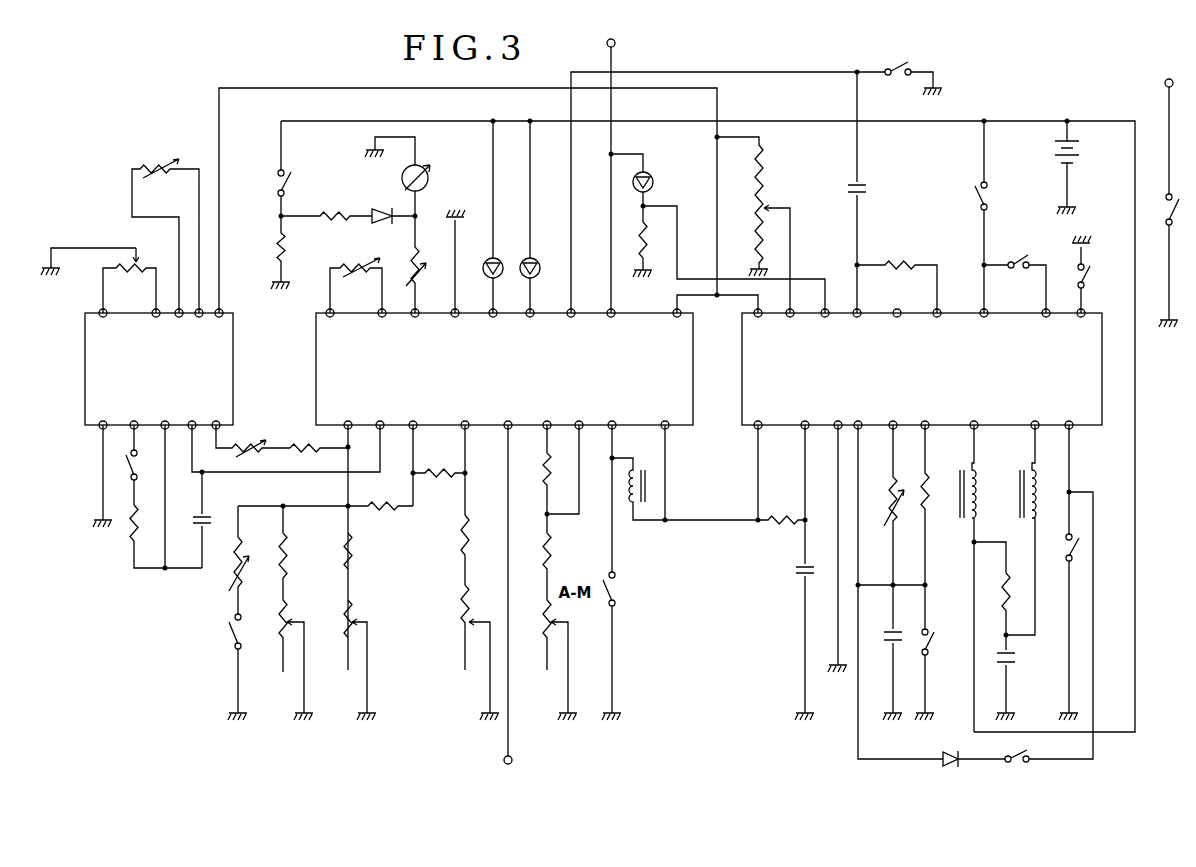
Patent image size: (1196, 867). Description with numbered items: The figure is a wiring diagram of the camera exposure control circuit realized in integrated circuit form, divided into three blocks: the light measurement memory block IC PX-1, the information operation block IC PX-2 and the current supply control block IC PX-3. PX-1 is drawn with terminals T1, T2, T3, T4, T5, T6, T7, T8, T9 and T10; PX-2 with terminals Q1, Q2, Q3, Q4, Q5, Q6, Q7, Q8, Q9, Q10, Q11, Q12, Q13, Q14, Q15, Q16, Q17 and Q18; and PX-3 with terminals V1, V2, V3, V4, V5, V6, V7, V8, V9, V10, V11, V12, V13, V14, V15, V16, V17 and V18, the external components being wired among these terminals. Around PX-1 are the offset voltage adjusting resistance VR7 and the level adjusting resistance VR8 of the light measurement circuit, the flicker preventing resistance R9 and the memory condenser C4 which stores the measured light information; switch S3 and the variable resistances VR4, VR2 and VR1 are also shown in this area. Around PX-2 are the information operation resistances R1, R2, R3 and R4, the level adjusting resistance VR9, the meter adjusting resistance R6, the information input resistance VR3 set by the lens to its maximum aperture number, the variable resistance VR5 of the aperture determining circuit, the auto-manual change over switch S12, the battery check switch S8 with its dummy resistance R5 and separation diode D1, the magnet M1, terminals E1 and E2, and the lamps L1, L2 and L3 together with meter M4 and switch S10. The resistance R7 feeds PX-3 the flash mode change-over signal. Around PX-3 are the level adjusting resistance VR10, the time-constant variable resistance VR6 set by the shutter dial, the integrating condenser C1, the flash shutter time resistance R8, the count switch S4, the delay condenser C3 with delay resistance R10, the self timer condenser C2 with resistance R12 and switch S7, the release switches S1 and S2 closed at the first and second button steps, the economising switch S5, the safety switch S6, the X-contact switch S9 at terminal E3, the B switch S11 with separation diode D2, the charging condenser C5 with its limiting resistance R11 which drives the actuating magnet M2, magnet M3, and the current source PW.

The light measurement memory block IC PX-1 is at (159, 369).
The information operation block IC PX-2 is at (504, 369).
The current supply control block IC PX-3 is at (922, 369).
The PX-1 terminal T1 is at (103, 416).
The PX-1 terminal T2 is at (134, 416).
The PX-1 terminal T3 is at (165, 416).
The PX-1 terminal T4 is at (192, 416).
The PX-1 terminal T5 is at (216, 416).
The PX-1 terminal T6 is at (219, 326).
The PX-1 terminal T7 is at (199, 326).
The PX-1 terminal T8 is at (179, 326).
The PX-1 terminal T9 is at (156, 326).
The PX-1 terminal T10 is at (103, 326).
The PX-2 terminal Q1 is at (348, 416).
The PX-2 terminal Q2 is at (380, 416).
The PX-2 terminal Q3 is at (413, 416).
The PX-2 terminal Q4 is at (465, 416).
The PX-2 terminal Q5 is at (508, 416).
The PX-2 terminal Q6 is at (547, 416).
The PX-2 terminal Q7 is at (579, 416).
The PX-2 terminal Q8 is at (612, 416).
The PX-2 terminal Q9 is at (665, 416).
The PX-2 terminal Q10 is at (677, 326).
The PX-2 terminal Q11 is at (611, 326).
The PX-2 terminal Q12 is at (571, 326).
The PX-2 terminal Q13 is at (530, 326).
The PX-2 terminal Q14 is at (493, 326).
The PX-2 terminal Q15 is at (455, 326).
The PX-2 terminal Q16 is at (415, 326).
The PX-2 terminal Q17 is at (382, 326).
The PX-2 terminal Q18 is at (330, 326).
The PX-3 terminal V1 is at (758, 416).
The PX-3 terminal V2 is at (805, 416).
The PX-3 terminal V3 is at (838, 416).
The PX-3 terminal V4 is at (862, 416).
The PX-3 terminal V5 is at (893, 416).
The PX-3 terminal V6 is at (925, 416).
The PX-3 terminal V7 is at (974, 416).
The PX-3 terminal V8 is at (1035, 416).
The PX-3 terminal V9 is at (1069, 416).
The PX-3 terminal V10 is at (1081, 326).
The PX-3 terminal V11 is at (1046, 326).
The PX-3 terminal V12 is at (984, 326).
The PX-3 terminal V13 is at (937, 326).
The PX-3 terminal V14 is at (897, 326).
The PX-3 terminal V15 is at (857, 326).
The PX-3 terminal V16 is at (825, 326).
The PX-3 terminal V17 is at (790, 326).
The PX-3 terminal V18 is at (758, 326).
The information operation resistance R1 is at (319, 439).
The information operation resistance R2 is at (325, 498).
The information operation resistance R3 is at (439, 464).
The information operation resistance R4 is at (558, 469).
The dummy resistance R5 is at (271, 252).
The meter adjusting resistance R6 is at (407, 264).
The flash mode change-over resistance R7 is at (652, 241).
The flash shutter time resistance R8 is at (937, 505).
The flicker preventing resistance R9 is at (166, 536).
The delay resistance R10 is at (783, 474).
The integrating time limiting resistance R11 is at (1019, 604).
The self timer resistance R12 is at (896, 276).
The variable resistor VR1 is at (344, 626).
The variable resistor VR2 is at (280, 612).
The information input resistance VR3 is at (544, 617).
The variable resistor VR4 is at (224, 560).
The variable resistance VR5 is at (465, 617).
The variable resistance unit VR6 is at (881, 505).
The offset voltage adjusting resistance VR7 is at (98, 280).
The light measurement level adjusting resistance VR8 is at (165, 236).
The information operation level adjusting resistance VR9 is at (356, 285).
The current supply level adjusting resistance VR10 is at (753, 224).
The shutter time integrating condenser C1 is at (883, 652).
The self timer condenser C2 is at (868, 192).
The delay condenser C3 is at (795, 572).
The memory condenser C4 is at (210, 496).
The charging condenser C5 is at (1015, 677).
The first release step switch S1 is at (1089, 274).
The second release step switch S2 is at (1060, 572).
The switch S3 is at (142, 465).
The count switch S4 is at (934, 652).
The current economising switch S5 is at (1014, 275).
The safety switch S6 is at (993, 217).
The self timer switch S7 is at (898, 59).
The battery check switch S8 is at (272, 168).
The X-contact synchronization switch S9 is at (1161, 260).
The switch S10 is at (223, 667).
The B switch S11 is at (1043, 627).
The auto-manual change over switch S12 is at (623, 589).
The lamp L1 is at (540, 217).
The lamp L2 is at (642, 180).
The lamp L3 is at (484, 217).
The magnet M1 is at (685, 474).
The magnet M2 is at (1019, 530).
The relay coil / magnet M3 is at (958, 483).
The motor M4 is at (397, 176).
The separation diode D1 is at (380, 229).
The separation diode D2 is at (972, 750).
The terminal E1 is at (620, 174).
The terminal E2 is at (517, 765).
The terminal E3 is at (1168, 128).
The current source PW is at (1081, 167).